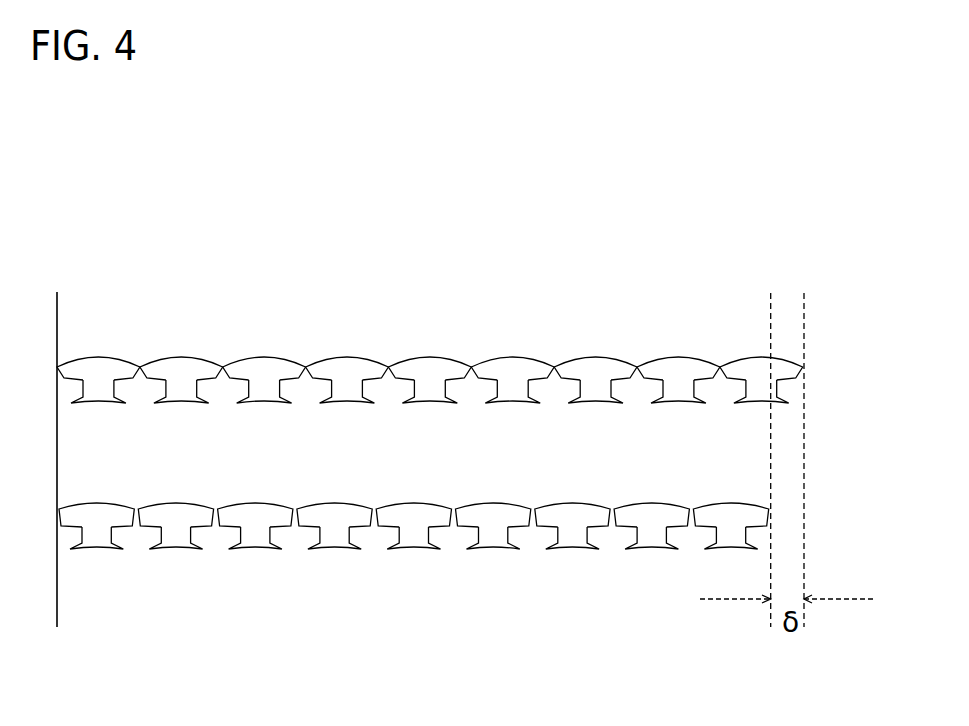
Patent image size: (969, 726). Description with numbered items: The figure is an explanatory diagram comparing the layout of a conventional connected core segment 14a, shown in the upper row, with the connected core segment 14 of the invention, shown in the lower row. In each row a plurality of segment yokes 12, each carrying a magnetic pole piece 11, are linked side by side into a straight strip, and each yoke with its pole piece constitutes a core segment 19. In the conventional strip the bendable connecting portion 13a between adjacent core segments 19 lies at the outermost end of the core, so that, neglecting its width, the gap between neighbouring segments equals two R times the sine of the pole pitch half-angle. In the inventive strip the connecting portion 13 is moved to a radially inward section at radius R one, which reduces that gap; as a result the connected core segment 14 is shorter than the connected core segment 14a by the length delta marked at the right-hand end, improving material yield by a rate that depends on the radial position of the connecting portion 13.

The magnetic pole piece 11 is at (505, 396).
The segment yoke 12 is at (518, 367).
The connecting portion 13 is at (300, 518).
The connecting portion 13a is at (308, 362).
The connected core segment 14 is at (573, 494).
The connected core segment 14a is at (601, 340).
The core segment 19 is at (247, 352).